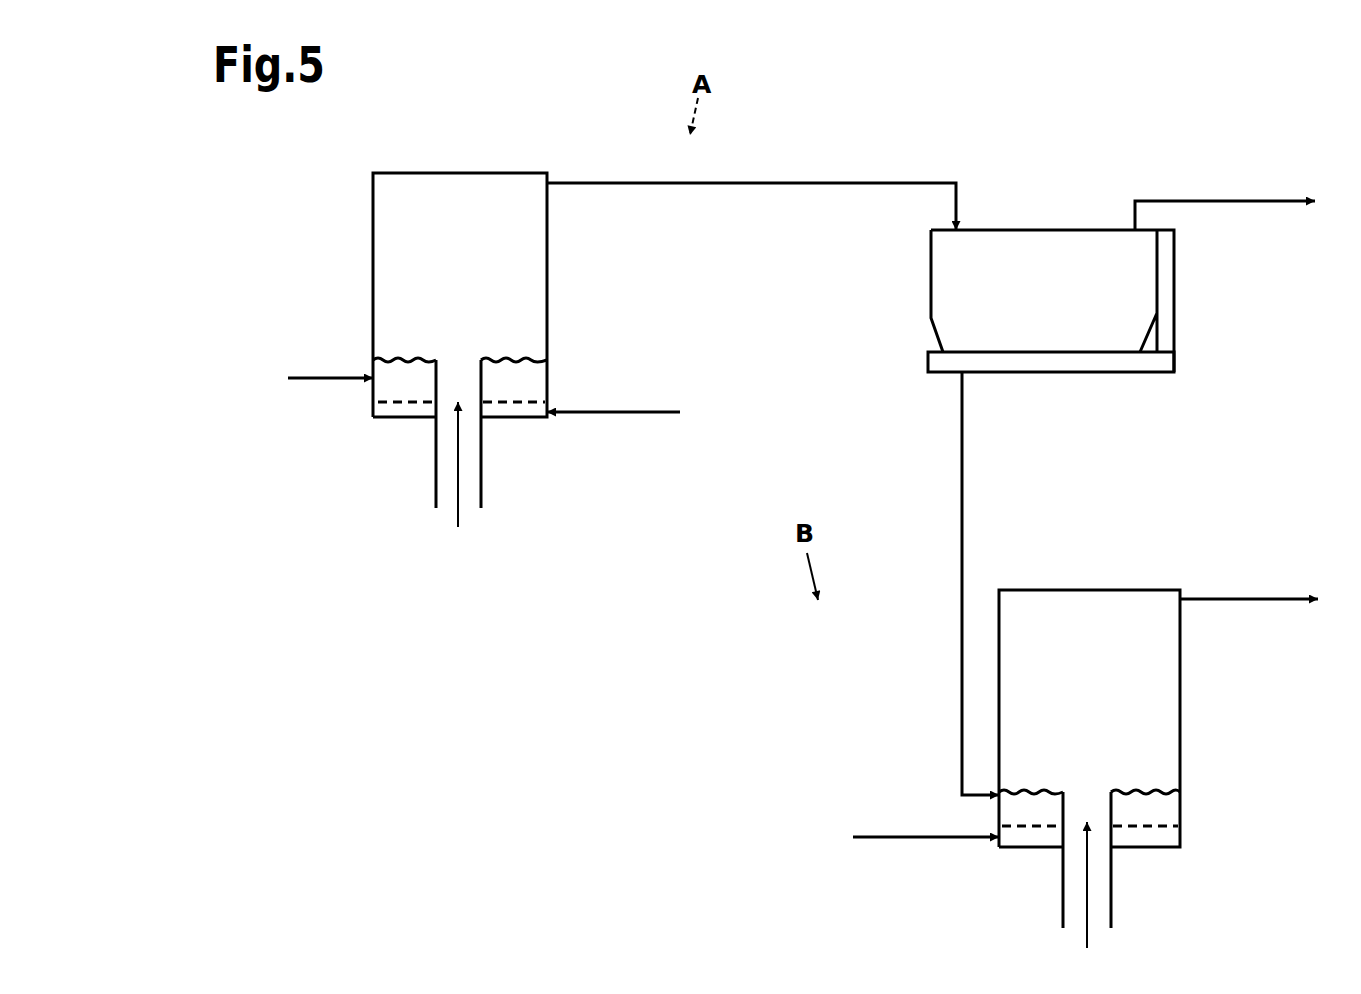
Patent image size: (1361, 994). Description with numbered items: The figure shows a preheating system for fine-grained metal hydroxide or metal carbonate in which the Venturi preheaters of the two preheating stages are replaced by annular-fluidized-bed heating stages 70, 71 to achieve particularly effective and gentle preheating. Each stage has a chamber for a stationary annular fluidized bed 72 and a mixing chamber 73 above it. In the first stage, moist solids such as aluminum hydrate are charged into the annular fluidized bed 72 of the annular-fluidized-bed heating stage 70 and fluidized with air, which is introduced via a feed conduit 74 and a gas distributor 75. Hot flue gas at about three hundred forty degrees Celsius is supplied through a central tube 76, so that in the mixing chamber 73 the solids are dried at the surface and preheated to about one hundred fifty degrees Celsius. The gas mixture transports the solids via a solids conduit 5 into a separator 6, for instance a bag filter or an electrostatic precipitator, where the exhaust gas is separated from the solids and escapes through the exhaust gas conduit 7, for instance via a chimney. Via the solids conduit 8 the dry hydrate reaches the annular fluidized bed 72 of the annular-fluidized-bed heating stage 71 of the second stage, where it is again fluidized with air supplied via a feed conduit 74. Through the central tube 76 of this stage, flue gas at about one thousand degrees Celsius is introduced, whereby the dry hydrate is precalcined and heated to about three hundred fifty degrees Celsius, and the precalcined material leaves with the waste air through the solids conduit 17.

The solids conduit 5 is at (759, 182).
The separator 6 is at (1063, 300).
The exhaust gas conduit 7 is at (1237, 198).
The solids conduit 8 is at (960, 512).
The solids conduit 17 is at (1252, 597).
The annular-fluidized-bed heating stage 70 is at (373, 267).
The annular-fluidized-bed heating stage 71 is at (1060, 588).
The annular fluidized bed 72 is at (405, 390).
The mixing chamber 73 is at (478, 286).
The feed conduit 74 is at (620, 413).
The gas distributor 75 is at (537, 400).
The central tube 76 is at (433, 487).